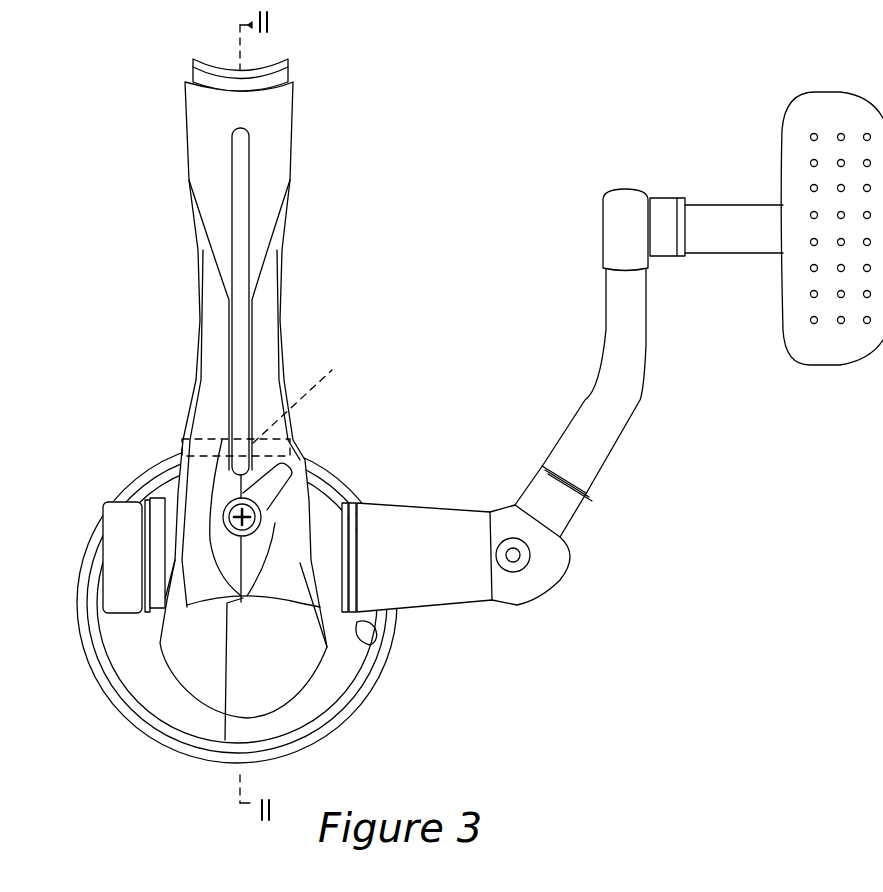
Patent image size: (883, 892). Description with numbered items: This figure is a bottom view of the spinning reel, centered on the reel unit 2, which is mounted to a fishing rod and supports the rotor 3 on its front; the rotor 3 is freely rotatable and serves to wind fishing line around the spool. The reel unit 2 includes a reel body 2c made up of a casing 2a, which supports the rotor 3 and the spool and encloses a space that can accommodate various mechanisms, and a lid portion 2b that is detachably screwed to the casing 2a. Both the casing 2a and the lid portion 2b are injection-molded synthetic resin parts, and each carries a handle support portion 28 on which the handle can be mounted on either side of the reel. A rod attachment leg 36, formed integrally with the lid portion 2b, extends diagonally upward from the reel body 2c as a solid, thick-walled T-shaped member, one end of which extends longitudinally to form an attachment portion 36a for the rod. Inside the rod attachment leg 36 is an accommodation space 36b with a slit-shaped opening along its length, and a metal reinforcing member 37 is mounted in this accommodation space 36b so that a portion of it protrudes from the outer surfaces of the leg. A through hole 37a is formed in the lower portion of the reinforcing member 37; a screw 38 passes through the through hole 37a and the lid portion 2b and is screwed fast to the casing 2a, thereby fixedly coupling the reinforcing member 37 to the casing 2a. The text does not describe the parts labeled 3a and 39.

The reel unit 2 is at (241, 383).
The casing 2a is at (303, 468).
The lid portion 2b is at (165, 483).
The reel body 2c is at (310, 442).
The rotor 3 is at (275, 603).
The housing tab 3a is at (370, 628).
The handle support portion 28 is at (350, 497).
The rod attachment leg 36 is at (208, 150).
The attachment portion 36a is at (250, 75).
The accommodation space 36b is at (248, 208).
The reinforcing member 37 is at (233, 368).
The through hole 37a is at (324, 390).
The screw 38 is at (182, 444).
The connecting arm block 39 is at (243, 567).